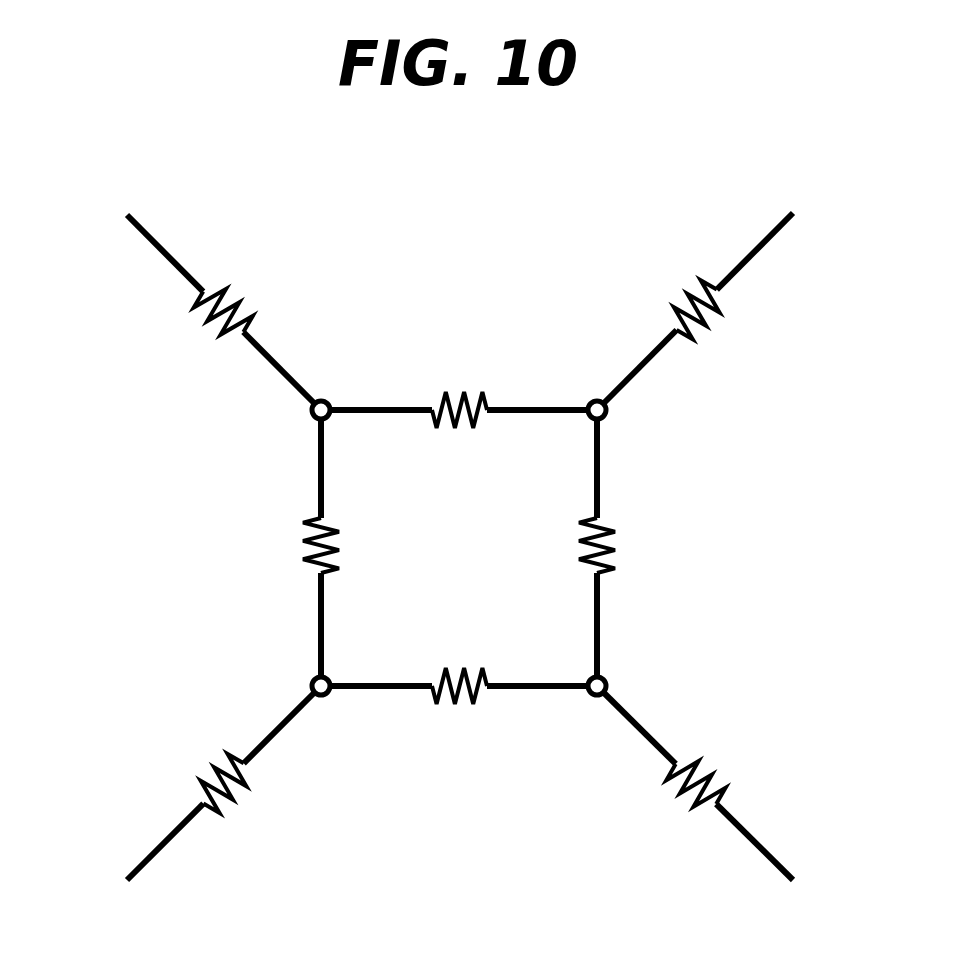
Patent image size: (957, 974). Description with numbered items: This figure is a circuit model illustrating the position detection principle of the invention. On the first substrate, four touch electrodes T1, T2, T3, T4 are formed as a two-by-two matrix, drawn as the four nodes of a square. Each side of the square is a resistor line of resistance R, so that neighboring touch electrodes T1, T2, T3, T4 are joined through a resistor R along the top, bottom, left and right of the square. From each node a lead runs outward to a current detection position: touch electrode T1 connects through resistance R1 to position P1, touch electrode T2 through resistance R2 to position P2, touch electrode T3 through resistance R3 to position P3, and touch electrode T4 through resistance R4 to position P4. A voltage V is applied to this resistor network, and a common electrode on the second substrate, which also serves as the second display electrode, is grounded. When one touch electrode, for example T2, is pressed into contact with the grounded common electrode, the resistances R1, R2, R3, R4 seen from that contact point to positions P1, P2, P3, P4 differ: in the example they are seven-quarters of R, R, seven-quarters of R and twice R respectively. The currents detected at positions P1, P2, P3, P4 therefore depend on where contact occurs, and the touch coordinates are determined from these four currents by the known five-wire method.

The current detection position P1 is at (140, 227).
The current detection position P2 is at (777, 225).
The current detection position P3 is at (777, 871).
The current detection position P4 is at (142, 871).
The resistance between touch point and position P1 R1 is at (257, 323).
The resistance between touch point and position P2 R2 is at (658, 318).
The resistance between touch point and position P3 R3 is at (672, 746).
The resistance between touch point and position P4 R4 is at (244, 749).
The resistor line resistance R is at (460, 548).
The touch electrode T1 is at (294, 423).
The touch electrode T2 is at (621, 423).
The touch electrode T3 is at (621, 670).
The touch electrode T4 is at (296, 670).